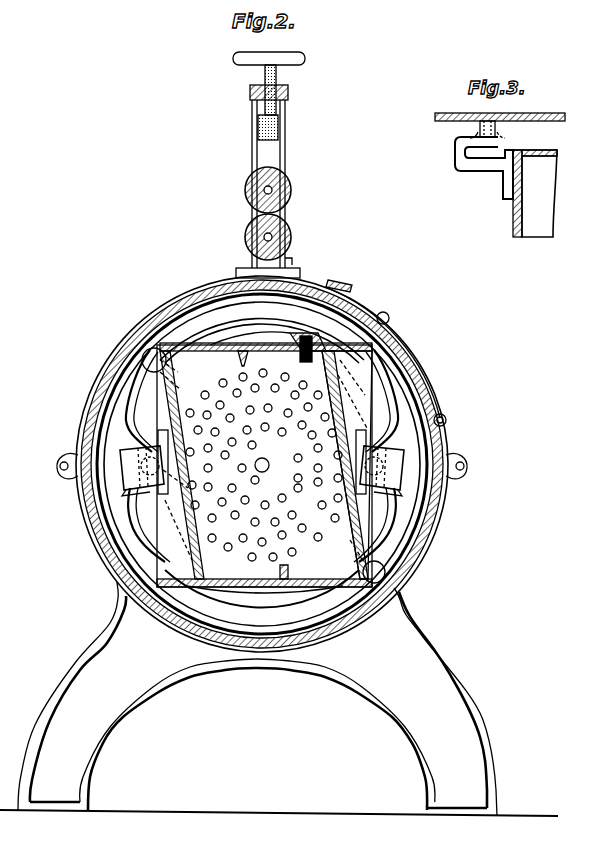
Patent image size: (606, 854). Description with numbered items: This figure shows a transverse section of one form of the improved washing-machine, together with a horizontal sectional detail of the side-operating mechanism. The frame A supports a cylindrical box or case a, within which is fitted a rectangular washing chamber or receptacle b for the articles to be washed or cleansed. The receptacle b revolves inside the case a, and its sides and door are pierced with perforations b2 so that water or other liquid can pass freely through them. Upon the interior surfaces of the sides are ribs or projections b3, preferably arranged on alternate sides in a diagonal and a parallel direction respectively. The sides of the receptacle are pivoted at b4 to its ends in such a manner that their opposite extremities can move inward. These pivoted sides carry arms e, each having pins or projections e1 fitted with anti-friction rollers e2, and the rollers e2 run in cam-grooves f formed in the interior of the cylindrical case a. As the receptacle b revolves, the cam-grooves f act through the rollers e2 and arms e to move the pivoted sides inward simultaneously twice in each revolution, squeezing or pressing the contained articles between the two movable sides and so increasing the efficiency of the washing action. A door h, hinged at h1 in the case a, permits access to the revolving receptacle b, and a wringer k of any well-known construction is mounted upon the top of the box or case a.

In FIG. 2, the frame A is at (279, 699).
In FIG. 2, the cylindrical box or case a is at (203, 645).
In FIG. 3, the cylindrical box or case a is at (540, 114).
In FIG. 2, the washing chamber or receptacle b is at (264, 462).
In FIG. 3, the washing chamber or receptacle b is at (525, 193).
In FIG. 2, the perforations b2 is at (293, 490).
In FIG. 2, the ribs or projections b3 is at (240, 358).
In FIG. 2, the pivots b4 is at (148, 368).
In FIG. 2, the arms e is at (128, 452).
In FIG. 3, the arms e is at (456, 156).
In FIG. 3, the pins or projections e1 is at (505, 134).
In FIG. 2, the anti-friction rollers e2 is at (122, 490).
In FIG. 3, the anti-friction rollers e2 is at (476, 133).
In FIG. 2, the cam-grooves f is at (134, 412).
In FIG. 3, the cam-grooves f is at (484, 120).
In FIG. 2, the door h is at (389, 320).
In FIG. 2, the hinge h1 is at (446, 420).
In FIG. 2, the wringer k is at (291, 190).